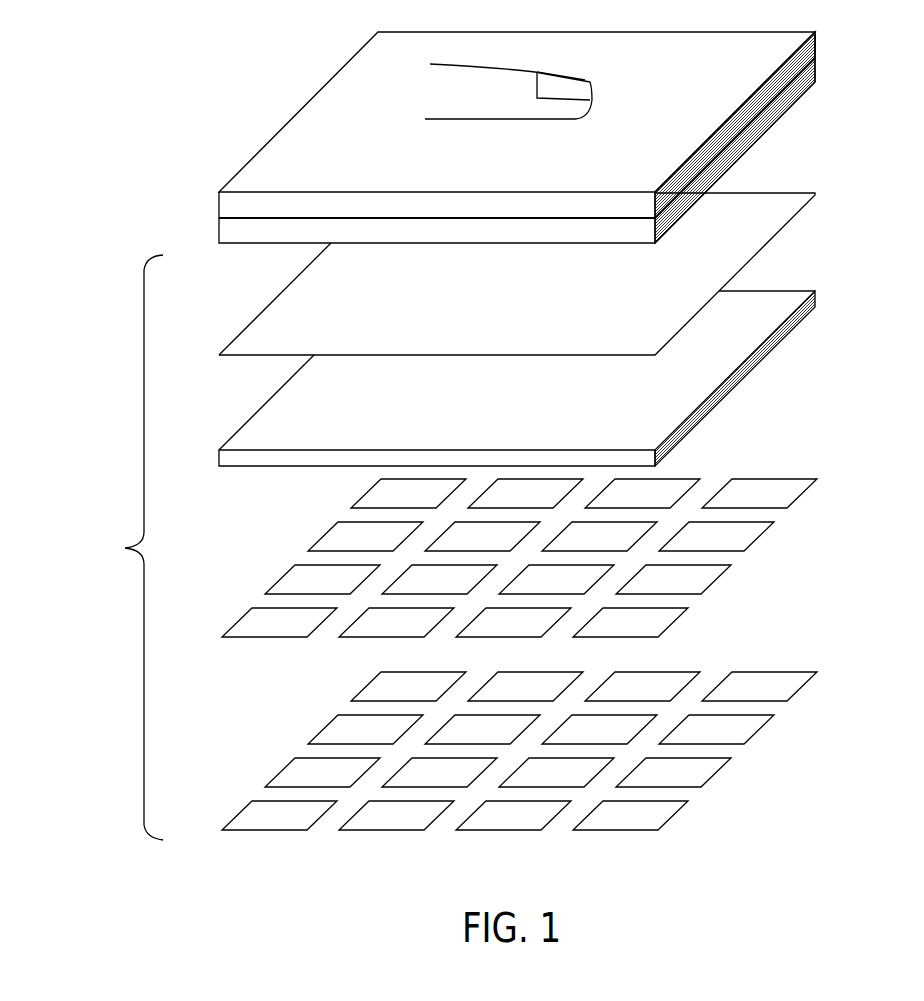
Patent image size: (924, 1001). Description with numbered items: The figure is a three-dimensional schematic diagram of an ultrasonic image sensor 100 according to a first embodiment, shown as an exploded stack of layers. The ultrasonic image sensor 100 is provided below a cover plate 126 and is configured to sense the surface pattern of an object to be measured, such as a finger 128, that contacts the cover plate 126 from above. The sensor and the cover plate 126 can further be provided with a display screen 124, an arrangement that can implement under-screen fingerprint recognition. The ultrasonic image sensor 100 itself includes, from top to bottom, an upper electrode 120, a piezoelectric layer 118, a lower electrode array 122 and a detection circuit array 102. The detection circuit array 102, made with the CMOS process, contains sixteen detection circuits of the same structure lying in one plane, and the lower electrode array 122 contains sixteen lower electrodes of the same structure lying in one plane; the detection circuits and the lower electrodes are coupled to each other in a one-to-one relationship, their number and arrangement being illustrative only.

The ultrasonic image sensor 100 is at (105, 547).
The detection circuit array 102 is at (360, 667).
The piezoelectric layer 118 is at (262, 412).
The upper electrode 120 is at (268, 320).
The lower electrode array 122 is at (364, 473).
The display screen 124 is at (817, 64).
The cover plate 126 is at (219, 206).
The finger 128 is at (592, 80).